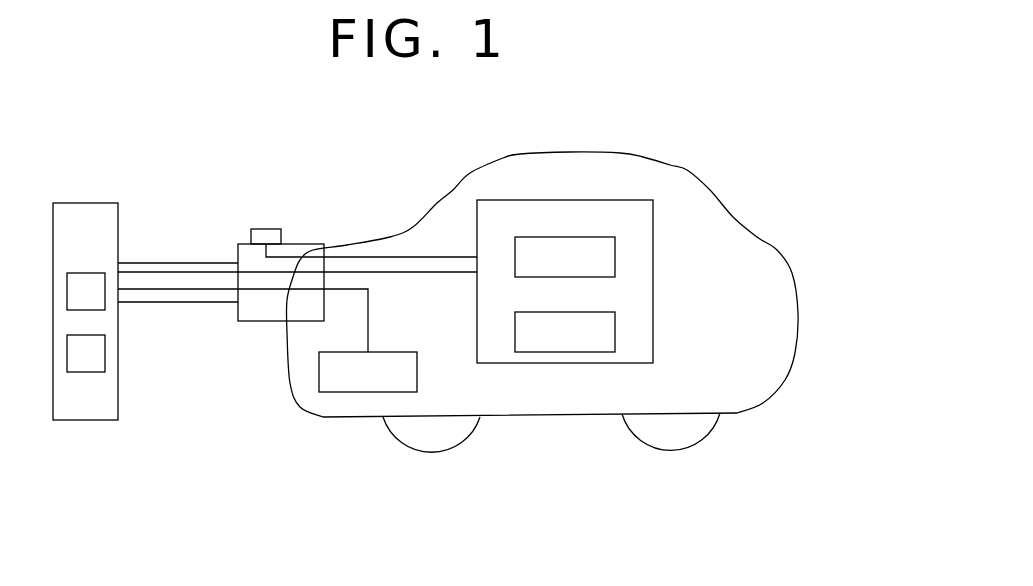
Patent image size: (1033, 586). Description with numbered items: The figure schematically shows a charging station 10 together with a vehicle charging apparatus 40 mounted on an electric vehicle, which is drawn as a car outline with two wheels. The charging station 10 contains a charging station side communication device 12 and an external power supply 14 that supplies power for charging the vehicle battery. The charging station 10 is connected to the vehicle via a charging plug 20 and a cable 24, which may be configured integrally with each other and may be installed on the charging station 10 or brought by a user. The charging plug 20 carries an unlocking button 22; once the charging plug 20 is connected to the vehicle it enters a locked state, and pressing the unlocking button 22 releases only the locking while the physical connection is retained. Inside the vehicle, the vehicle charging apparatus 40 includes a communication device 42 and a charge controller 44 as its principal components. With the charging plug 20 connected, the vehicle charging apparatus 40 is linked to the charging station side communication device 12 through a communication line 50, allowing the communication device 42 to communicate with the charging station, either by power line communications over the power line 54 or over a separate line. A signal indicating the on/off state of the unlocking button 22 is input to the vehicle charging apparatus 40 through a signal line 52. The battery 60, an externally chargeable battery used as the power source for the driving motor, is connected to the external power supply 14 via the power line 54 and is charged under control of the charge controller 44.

The charging station 10 is at (124, 388).
The charging station side communication device 12 is at (98, 310).
The external power supply 14 is at (105, 357).
The charging plug 20 is at (252, 322).
The unlocking button 22 is at (267, 229).
The cable 24 is at (185, 300).
The vehicle charging apparatus 40 is at (605, 198).
The communication device 42 is at (583, 236).
The charge controller 44 is at (583, 311).
The communication line 50 is at (447, 275).
The signal line 52 is at (447, 256).
The power line 54 is at (368, 322).
The battery 60 is at (417, 371).